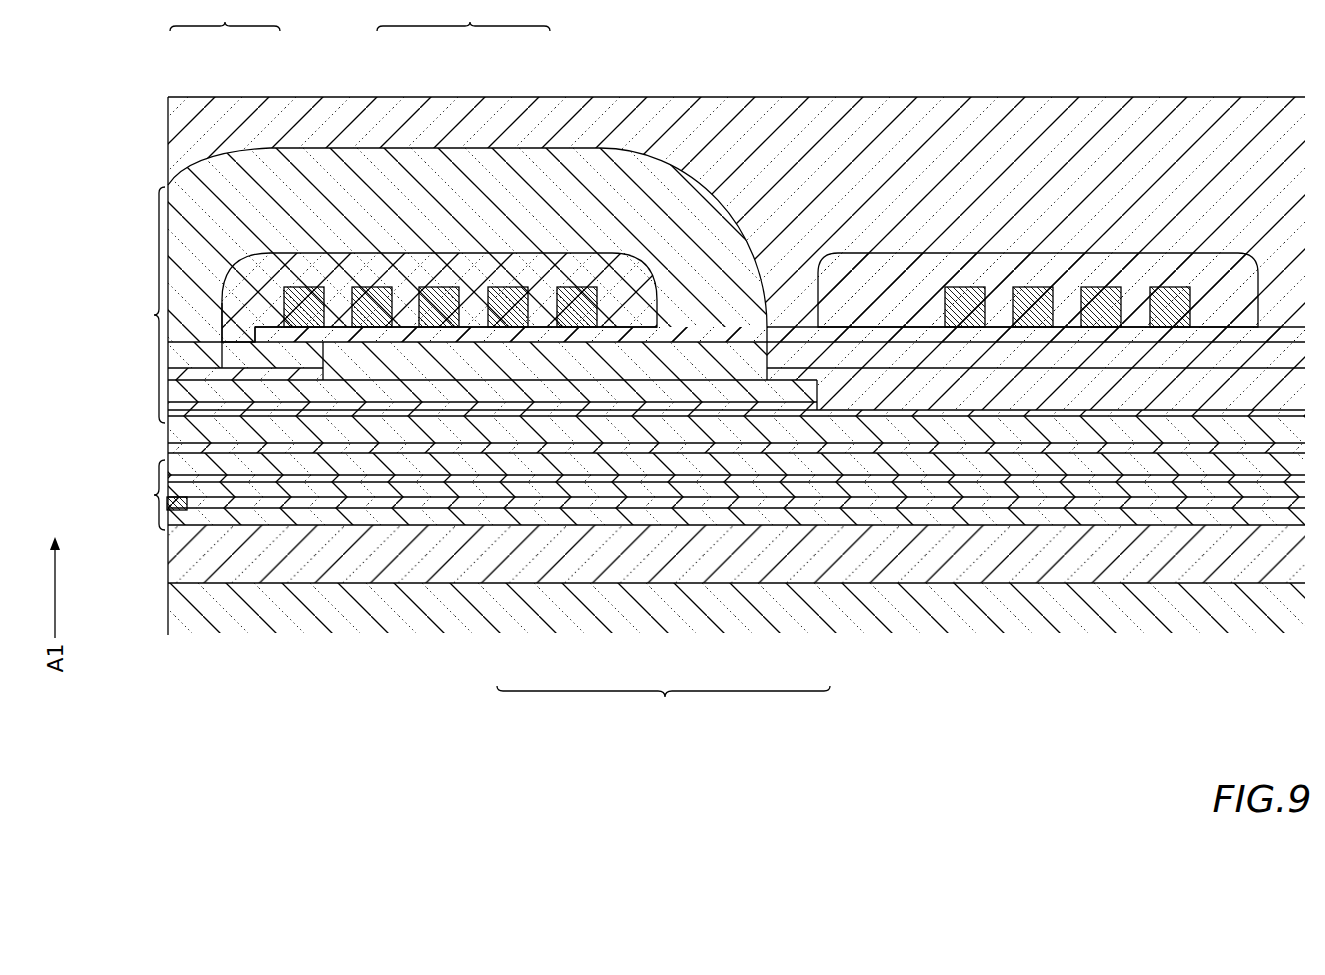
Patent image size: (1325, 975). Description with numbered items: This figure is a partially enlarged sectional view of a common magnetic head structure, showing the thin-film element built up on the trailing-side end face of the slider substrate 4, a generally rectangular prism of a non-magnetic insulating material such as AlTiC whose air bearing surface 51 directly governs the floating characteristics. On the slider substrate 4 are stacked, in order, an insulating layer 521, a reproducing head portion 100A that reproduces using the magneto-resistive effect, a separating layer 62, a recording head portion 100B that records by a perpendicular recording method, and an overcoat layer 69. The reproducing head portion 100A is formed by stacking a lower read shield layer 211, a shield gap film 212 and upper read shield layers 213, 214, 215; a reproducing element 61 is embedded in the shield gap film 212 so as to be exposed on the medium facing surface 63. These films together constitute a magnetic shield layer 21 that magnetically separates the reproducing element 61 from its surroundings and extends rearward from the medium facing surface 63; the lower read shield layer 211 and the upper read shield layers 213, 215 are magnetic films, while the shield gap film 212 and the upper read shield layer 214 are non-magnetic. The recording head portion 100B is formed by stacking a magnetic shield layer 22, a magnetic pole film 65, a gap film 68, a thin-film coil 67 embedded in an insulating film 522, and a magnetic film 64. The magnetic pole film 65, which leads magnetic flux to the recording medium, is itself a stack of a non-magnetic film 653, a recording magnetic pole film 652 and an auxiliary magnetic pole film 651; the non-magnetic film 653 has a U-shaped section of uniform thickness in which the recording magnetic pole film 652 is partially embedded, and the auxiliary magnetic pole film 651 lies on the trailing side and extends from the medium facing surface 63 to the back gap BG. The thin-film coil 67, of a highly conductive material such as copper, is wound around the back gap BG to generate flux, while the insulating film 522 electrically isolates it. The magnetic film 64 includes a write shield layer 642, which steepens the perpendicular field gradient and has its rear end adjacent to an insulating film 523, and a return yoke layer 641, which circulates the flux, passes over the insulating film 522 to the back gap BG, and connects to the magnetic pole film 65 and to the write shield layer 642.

The slider substrate 4 is at (928, 605).
The magnetic shield layer 21 is at (663, 708).
The lower read shield layer 211 is at (798, 514).
The shield gap film 212 is at (717, 503).
The upper read shield layer 213 is at (653, 488).
The upper read shield layer 214 is at (578, 478).
The upper read shield layer 215 is at (495, 463).
The magnetic shield layer 22 is at (313, 432).
The air bearing surface 51 is at (165, 623).
The insulating layer 521 is at (857, 563).
The insulating film 522 is at (543, 297).
The insulating film 523 is at (245, 355).
The reproducing element 61 is at (172, 513).
The separating layer 62 is at (432, 452).
The medium facing surface 63 is at (164, 148).
The magnetic film 64 is at (225, 15).
The return yoke layer 641 is at (236, 167).
The write shield layer 642 is at (173, 345).
The magnetic pole film 65 is at (463, 15).
The auxiliary magnetic pole film 651 is at (468, 370).
The recording magnetic pole film 652 is at (397, 392).
The non-magnetic film 653 is at (262, 408).
The thin-film coil 67 is at (597, 290).
The gap film 68 is at (378, 416).
The overcoat layer 69 is at (843, 118).
The back gap BG is at (698, 341).
The reproducing head portion 100A is at (128, 495).
The recording head portion 100B is at (128, 305).